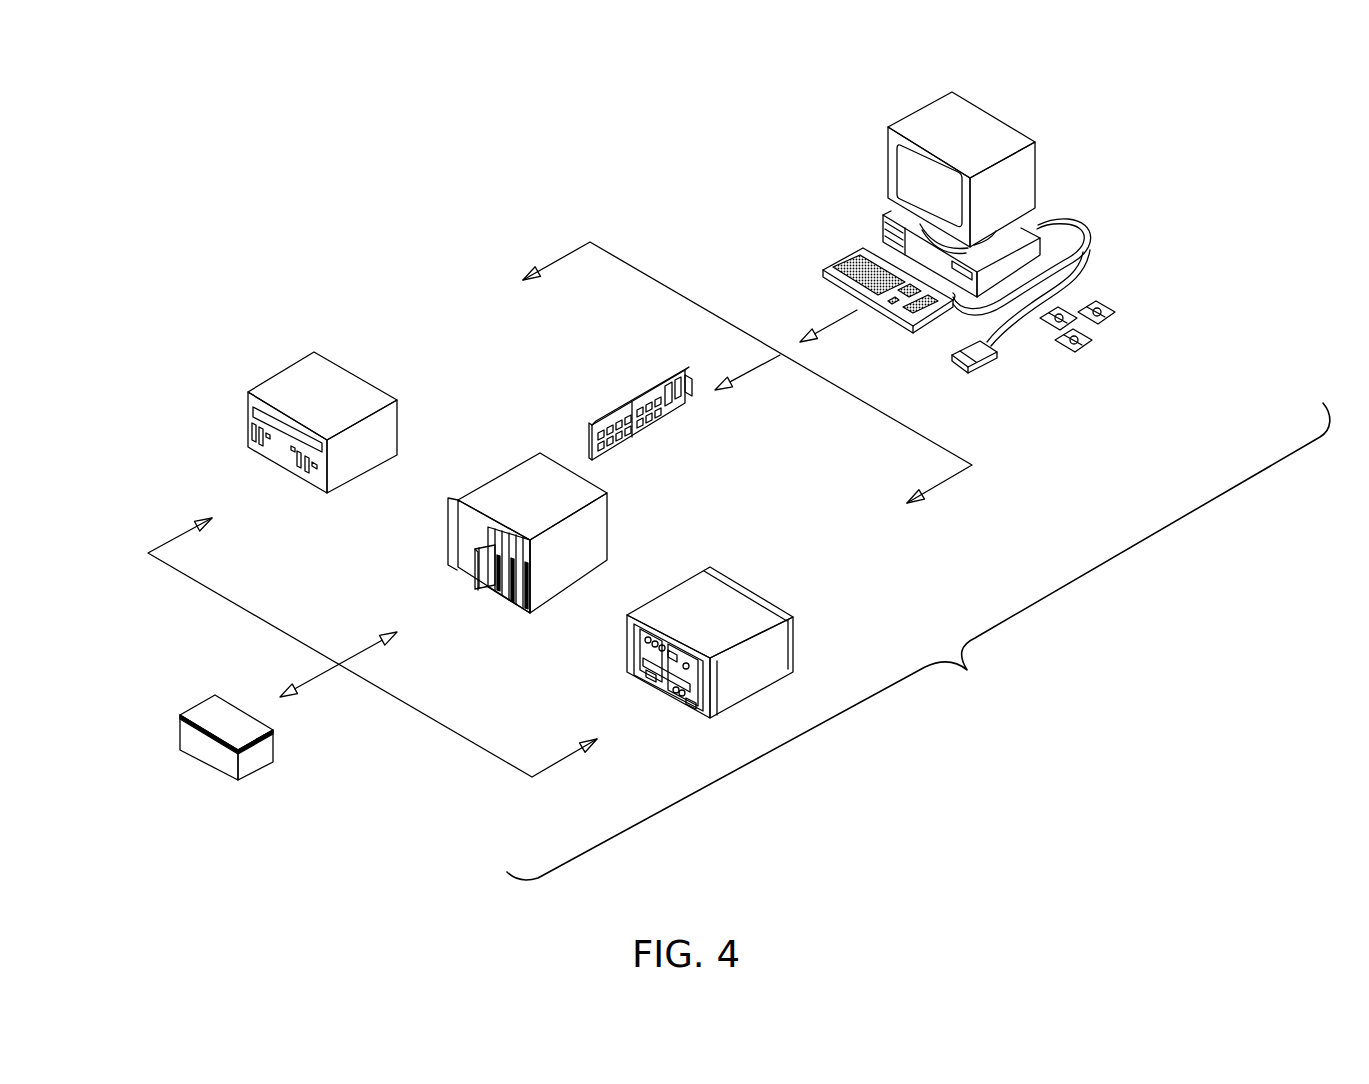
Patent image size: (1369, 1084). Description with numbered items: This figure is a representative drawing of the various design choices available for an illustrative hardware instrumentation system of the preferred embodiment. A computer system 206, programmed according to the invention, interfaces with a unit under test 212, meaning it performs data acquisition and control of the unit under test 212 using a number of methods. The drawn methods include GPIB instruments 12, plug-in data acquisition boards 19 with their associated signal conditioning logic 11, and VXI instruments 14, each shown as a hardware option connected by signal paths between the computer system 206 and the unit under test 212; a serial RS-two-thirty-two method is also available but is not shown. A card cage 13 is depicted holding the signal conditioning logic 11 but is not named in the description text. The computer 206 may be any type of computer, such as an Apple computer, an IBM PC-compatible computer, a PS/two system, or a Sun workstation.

The computer system 206 is at (969, 225).
The GPIB instruments 12 is at (315, 410).
The card cage 13 is at (525, 544).
The signal conditioning logic 11 is at (515, 602).
The VXI instruments 14 is at (716, 633).
The plug-in data acquisition boards 19 is at (633, 394).
The unit under test 212 is at (269, 761).